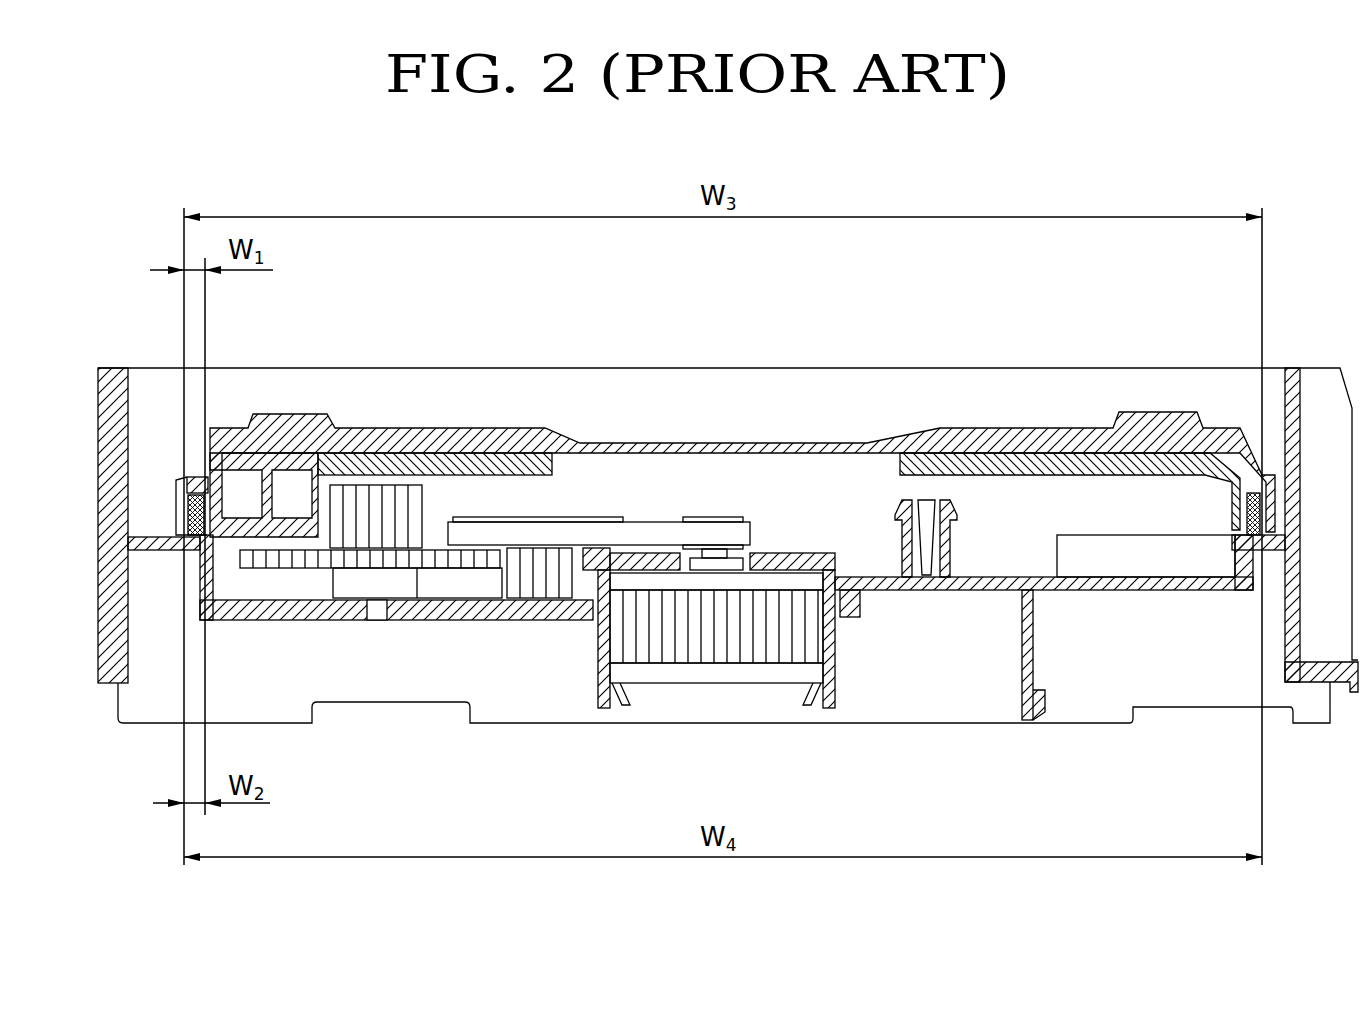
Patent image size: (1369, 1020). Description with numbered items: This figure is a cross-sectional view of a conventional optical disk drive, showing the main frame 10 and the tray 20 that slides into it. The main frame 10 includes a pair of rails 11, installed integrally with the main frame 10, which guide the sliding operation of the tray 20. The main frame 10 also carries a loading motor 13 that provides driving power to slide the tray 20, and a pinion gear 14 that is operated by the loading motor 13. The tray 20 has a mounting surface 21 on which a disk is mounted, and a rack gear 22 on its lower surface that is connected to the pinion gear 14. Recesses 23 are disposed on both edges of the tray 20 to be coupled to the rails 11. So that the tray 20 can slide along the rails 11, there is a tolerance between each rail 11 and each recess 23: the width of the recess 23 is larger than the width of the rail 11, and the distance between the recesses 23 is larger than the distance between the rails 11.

The main frame 10 is at (1315, 368).
The rails 11 is at (180, 515).
The loading motor 13 is at (765, 655).
The pinion gear 14 is at (290, 565).
The tray 20 is at (977, 425).
The mounting surface 21 is at (500, 428).
The rack gear 22 is at (325, 478).
The recesses 23 is at (180, 496).